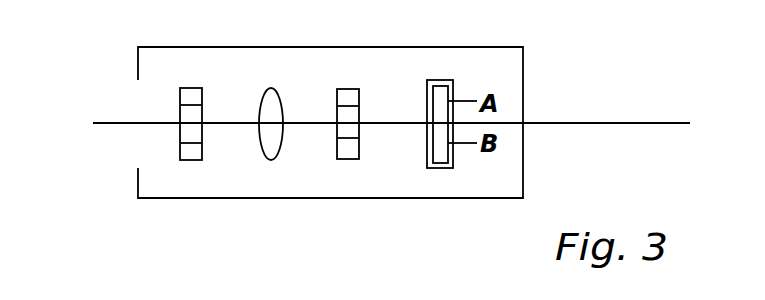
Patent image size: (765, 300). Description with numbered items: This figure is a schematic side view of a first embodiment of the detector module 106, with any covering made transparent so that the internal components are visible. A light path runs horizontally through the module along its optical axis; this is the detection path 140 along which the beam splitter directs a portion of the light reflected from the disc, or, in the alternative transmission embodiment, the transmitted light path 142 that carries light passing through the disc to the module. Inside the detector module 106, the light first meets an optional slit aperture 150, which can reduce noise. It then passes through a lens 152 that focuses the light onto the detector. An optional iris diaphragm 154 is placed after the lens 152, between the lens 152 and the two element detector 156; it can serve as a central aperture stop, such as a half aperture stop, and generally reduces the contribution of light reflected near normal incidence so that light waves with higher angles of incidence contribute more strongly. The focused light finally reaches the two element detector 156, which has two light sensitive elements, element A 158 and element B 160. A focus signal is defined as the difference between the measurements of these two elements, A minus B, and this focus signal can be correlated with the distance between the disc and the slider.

The detector module 106 is at (415, 47).
The detection path 140 is at (118, 123).
The transmitted light path 142 is at (617, 122).
The slit aperture 150 is at (187, 88).
The lens 152 is at (271, 88).
The iris diaphragm 154 is at (337, 150).
The two element detector 156 is at (426, 162).
The light sensitive element A 158 is at (448, 88).
The light sensitive element B 160 is at (454, 160).